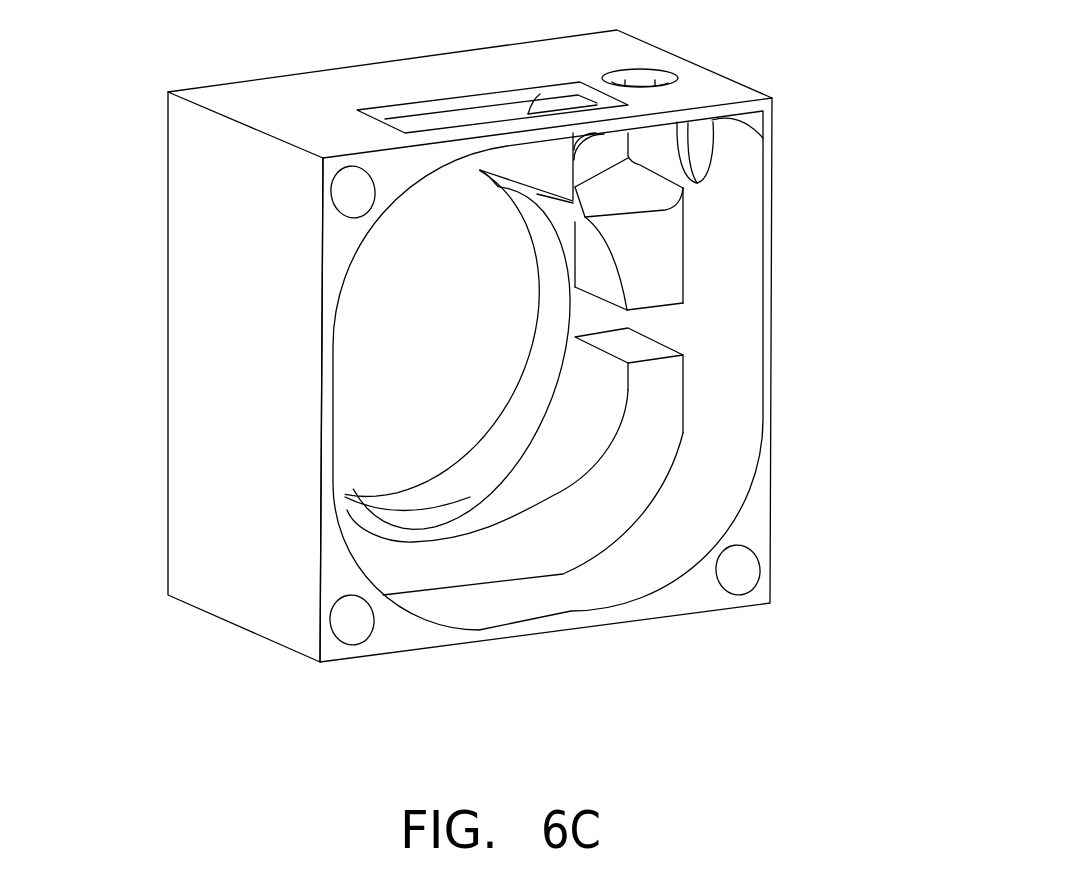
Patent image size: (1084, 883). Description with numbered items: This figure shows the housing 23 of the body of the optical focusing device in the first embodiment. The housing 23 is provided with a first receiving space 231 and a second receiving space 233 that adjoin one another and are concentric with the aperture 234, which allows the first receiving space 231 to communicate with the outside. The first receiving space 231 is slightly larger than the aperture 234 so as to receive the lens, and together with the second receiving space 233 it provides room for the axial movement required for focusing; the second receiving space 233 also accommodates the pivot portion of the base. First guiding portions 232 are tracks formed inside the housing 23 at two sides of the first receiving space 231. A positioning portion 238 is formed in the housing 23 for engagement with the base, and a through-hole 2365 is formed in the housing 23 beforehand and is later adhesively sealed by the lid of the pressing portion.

The housing 23 is at (235, 548).
The first receiving space 231 is at (503, 507).
The first guiding portions 232 is at (657, 323).
The second receiving space 233 is at (580, 586).
The aperture 234 is at (408, 310).
The positioning portion 238 is at (742, 573).
The through-hole 2365 is at (672, 80).